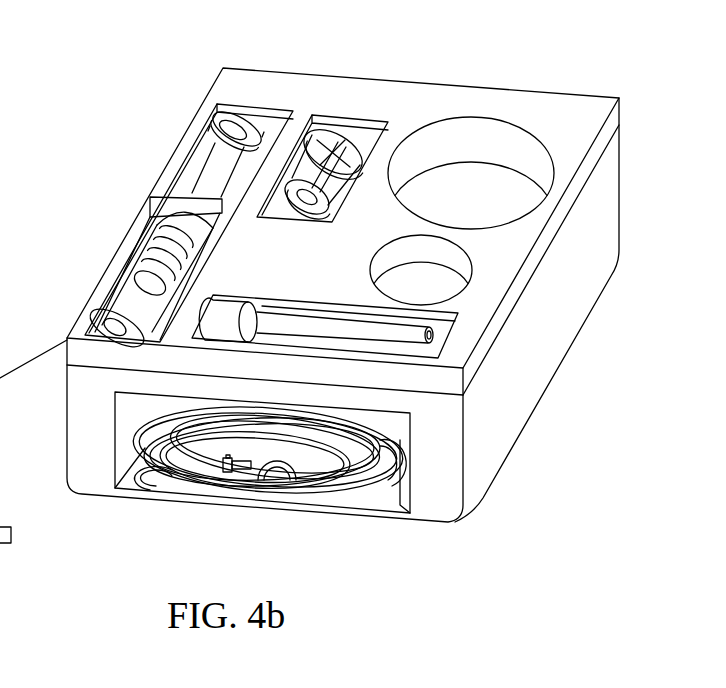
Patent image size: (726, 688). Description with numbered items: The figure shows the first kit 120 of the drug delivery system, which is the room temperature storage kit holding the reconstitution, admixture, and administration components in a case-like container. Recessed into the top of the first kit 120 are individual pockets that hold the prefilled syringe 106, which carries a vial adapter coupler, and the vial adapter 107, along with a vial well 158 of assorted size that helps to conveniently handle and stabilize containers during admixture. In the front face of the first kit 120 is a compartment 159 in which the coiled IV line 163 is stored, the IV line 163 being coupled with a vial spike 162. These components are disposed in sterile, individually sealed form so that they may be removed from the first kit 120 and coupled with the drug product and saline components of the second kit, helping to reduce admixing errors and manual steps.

The prefilled syringe 106 is at (157, 270).
The vial adapter 107 is at (350, 167).
The first kit 120 is at (619, 100).
The vial well 158 is at (483, 147).
The compartment 159 is at (400, 503).
The vial spike 162 is at (226, 472).
The IV line 163 is at (302, 485).